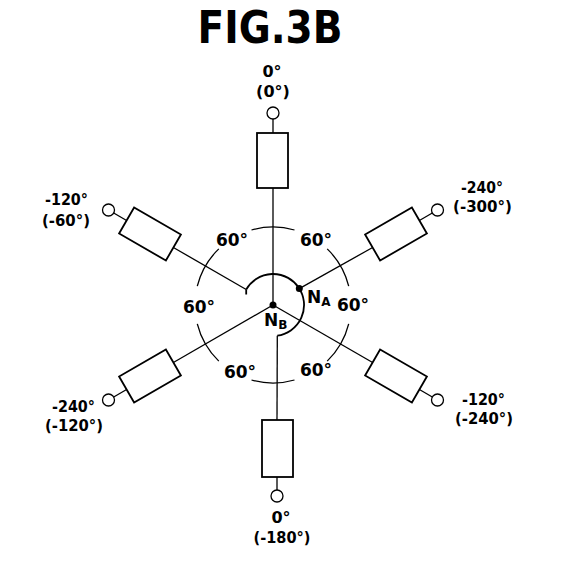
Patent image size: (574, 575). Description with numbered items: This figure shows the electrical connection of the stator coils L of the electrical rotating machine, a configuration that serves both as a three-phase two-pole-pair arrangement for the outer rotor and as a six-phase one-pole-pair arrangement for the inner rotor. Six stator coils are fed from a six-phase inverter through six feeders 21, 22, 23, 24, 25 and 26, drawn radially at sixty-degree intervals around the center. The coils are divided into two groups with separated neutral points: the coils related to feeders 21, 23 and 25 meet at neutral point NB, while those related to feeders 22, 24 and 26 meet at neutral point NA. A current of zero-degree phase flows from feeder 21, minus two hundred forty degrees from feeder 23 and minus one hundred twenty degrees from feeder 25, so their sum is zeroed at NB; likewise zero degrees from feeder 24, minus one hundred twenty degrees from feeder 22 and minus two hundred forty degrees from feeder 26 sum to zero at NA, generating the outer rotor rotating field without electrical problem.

The feeder 21 is at (279, 113).
The feeder 22 is at (108, 204).
The feeder 23 is at (106, 395).
The feeder 24 is at (283, 496).
The feeder 25 is at (444, 393).
The feeder 26 is at (437, 203).